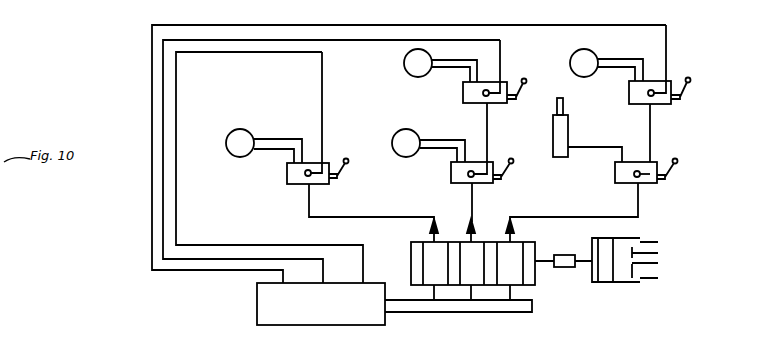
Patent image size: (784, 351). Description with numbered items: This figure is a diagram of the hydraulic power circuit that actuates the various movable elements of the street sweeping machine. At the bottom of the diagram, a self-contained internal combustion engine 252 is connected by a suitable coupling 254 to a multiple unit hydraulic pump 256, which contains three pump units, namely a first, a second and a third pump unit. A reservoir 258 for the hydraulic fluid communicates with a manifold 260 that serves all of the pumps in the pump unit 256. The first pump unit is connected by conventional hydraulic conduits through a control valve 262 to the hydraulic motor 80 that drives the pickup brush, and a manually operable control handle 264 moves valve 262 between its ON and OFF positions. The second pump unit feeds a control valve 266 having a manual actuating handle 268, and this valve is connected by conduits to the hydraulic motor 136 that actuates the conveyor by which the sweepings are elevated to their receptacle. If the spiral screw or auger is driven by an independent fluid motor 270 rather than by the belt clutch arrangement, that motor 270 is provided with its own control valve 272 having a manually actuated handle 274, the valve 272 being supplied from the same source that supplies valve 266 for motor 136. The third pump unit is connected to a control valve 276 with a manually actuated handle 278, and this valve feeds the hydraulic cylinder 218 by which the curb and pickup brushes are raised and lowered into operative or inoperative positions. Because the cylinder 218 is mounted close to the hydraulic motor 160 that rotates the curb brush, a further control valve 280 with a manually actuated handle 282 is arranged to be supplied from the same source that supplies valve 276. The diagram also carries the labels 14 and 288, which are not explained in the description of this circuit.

The vehicle 14 is at (216, 345).
The hydraulic motor 80 is at (243, 135).
The hydraulic motor 136 is at (410, 132).
The hydraulic motor 160 is at (587, 53).
The hydraulic cylinder 218 is at (553, 130).
The internal combustion engine 252 is at (622, 277).
The coupling 254 is at (573, 261).
The multiple unit hydraulic pump 256 is at (417, 247).
The reservoir 258 is at (355, 318).
The manifold 260 is at (523, 312).
The control valve 262 is at (295, 184).
The control handle 264 is at (342, 172).
The control valve 266 is at (455, 184).
The actuating handle 268 is at (509, 167).
The independent fluid motor 270 is at (407, 69).
The control valve 272 is at (467, 96).
The handle 274 is at (525, 78).
The control valve 276 is at (653, 184).
The handle 278 is at (678, 168).
The control valve 280 is at (640, 105).
The handle 282 is at (688, 88).
The hydraulic line 288 is at (659, 345).